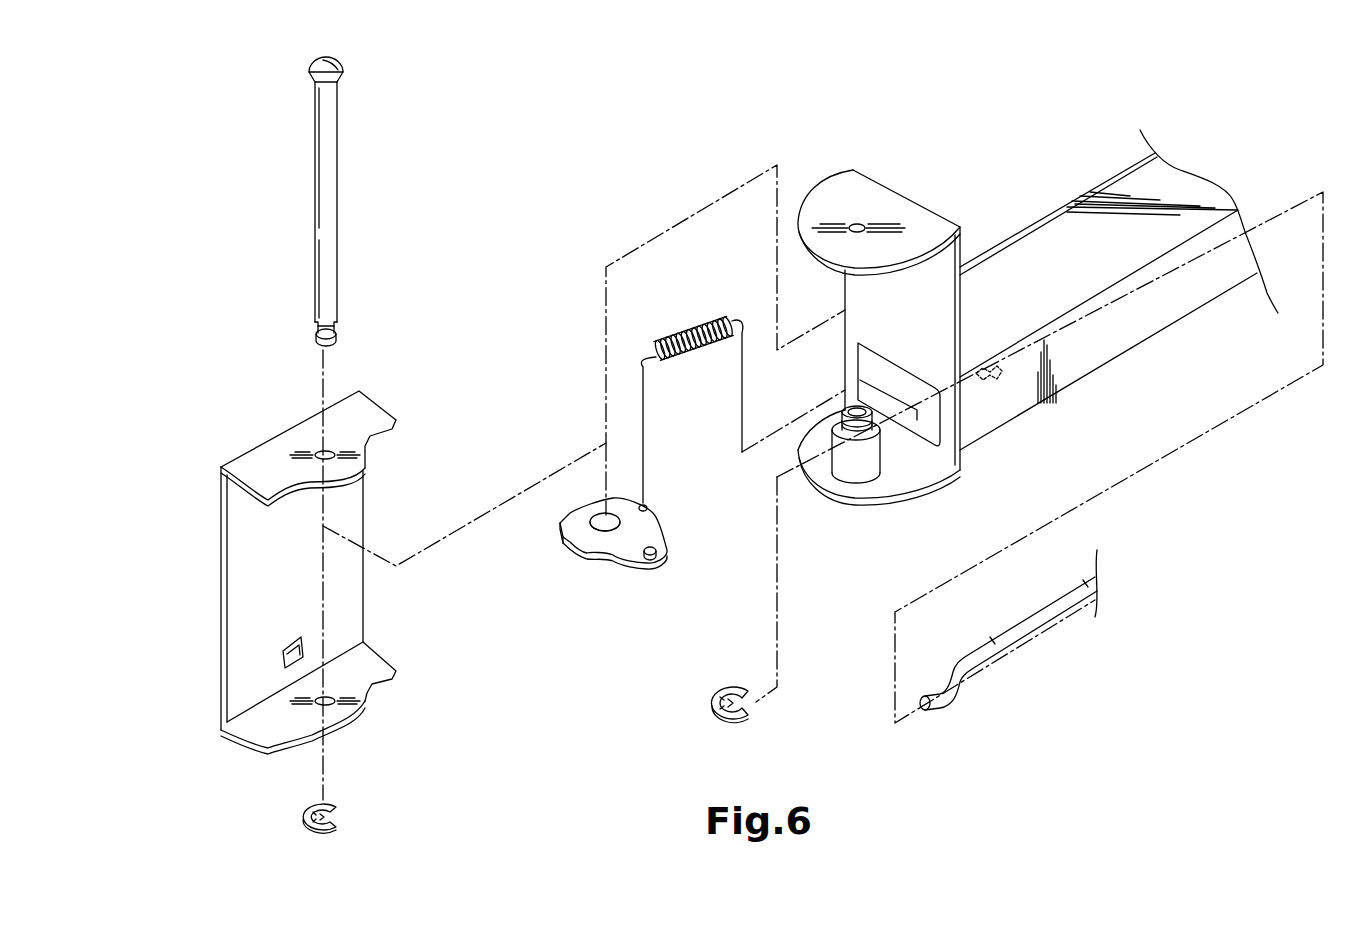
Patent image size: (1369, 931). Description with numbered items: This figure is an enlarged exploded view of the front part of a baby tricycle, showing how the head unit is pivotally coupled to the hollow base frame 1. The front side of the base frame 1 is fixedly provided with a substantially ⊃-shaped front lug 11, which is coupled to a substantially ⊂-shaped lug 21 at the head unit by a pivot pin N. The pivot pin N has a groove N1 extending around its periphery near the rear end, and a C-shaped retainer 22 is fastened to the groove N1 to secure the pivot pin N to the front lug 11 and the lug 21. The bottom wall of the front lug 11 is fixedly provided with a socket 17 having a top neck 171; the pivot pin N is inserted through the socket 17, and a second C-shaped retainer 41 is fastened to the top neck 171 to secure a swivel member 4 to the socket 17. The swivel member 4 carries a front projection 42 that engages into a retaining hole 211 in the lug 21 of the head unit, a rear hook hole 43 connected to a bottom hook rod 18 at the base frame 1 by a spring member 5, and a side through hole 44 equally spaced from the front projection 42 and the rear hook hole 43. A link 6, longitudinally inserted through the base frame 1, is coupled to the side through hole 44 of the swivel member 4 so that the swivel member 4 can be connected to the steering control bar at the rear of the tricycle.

The base frame 1 is at (1030, 240).
The front lug 11 is at (905, 215).
The socket 17 is at (853, 467).
The top neck 171 is at (867, 417).
The bottom hook rod 18 is at (987, 378).
The lug 21 is at (241, 551).
The retaining hole 211 is at (281, 657).
The C-shaped retainer 22 is at (305, 815).
The swivel member 4 is at (615, 548).
The C-shaped retainer 41 is at (712, 710).
The front projection 42 is at (566, 545).
The rear hook hole 43 is at (645, 507).
The side through hole 44 is at (661, 562).
The spring member 5 is at (693, 330).
The link 6 is at (1035, 615).
The pivot pin N is at (325, 194).
The groove N1 is at (316, 329).